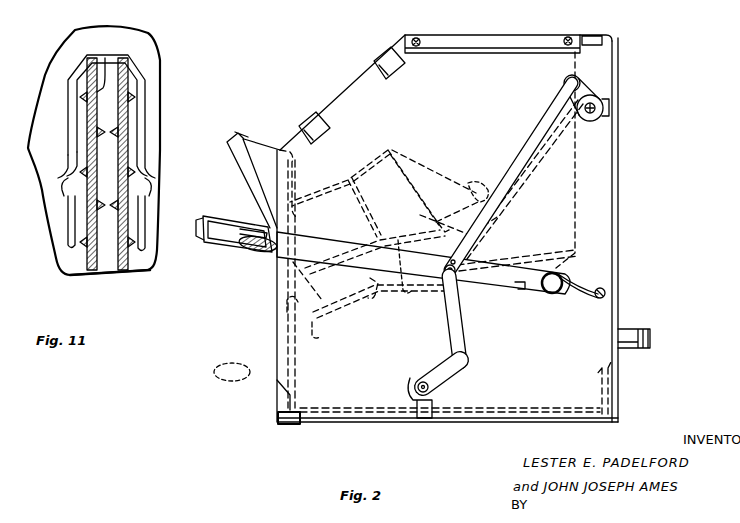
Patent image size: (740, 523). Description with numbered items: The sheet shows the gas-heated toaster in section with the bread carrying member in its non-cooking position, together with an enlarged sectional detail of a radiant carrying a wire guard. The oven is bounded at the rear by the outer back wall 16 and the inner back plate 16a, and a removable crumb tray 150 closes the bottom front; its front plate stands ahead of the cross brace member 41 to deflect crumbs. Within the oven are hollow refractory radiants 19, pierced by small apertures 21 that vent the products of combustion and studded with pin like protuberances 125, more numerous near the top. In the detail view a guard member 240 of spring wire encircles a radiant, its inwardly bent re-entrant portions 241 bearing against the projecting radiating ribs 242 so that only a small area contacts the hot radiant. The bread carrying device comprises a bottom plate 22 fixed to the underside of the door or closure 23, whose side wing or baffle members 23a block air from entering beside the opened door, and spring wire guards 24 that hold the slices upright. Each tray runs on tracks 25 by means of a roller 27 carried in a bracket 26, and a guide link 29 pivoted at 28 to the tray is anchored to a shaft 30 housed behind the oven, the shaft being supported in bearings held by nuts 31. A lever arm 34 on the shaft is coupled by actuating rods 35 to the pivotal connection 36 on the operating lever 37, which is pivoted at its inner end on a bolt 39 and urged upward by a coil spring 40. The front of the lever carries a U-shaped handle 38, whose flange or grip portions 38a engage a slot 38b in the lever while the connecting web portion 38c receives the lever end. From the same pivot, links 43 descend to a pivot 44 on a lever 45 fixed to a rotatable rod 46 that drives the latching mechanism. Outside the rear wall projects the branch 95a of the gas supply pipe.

In FIG. 2, the outer back wall 16 is at (620, 150).
In FIG. 2, the inner back plate 16a is at (577, 172).
In FIG. 11, the radiant 19 is at (105, 58).
In FIG. 11, the small apertures 21 is at (108, 272).
In FIG. 2, the bottom plate 22 is at (447, 214).
In FIG. 2, the door or closure 23 is at (238, 156).
In FIG. 2, the side wing or baffle members 23a is at (284, 132).
In FIG. 2, the spring wire guards 24 is at (392, 150).
In FIG. 2, the tracks or runways 25 is at (418, 290).
In FIG. 2, the bracket 26 is at (400, 262).
In FIG. 2, the roller 27 is at (384, 292).
In FIG. 2, the pivot 28 is at (470, 180).
In FIG. 2, the guide link 29 is at (510, 145).
In FIG. 2, the shaft 30 is at (600, 110).
In FIG. 2, the nuts 31 is at (604, 98).
In FIG. 2, the lever arm 34 is at (587, 91).
In FIG. 2, the actuating rods 35 is at (556, 110).
In FIG. 2, the pivotal connection 36 is at (457, 272).
In FIG. 2, the operating lever 37 is at (342, 246).
In FIG. 2, the handle 38 is at (215, 243).
In FIG. 2, the flange or grip portion 38a is at (250, 230).
In FIG. 2, the slot 38b is at (262, 252).
In FIG. 2, the connecting web portion 38c is at (196, 232).
In FIG. 2, the bolt 39 is at (550, 293).
In FIG. 2, the coil spring 40 is at (574, 284).
In FIG. 2, the cross brace member 41 is at (320, 337).
In FIG. 2, the links 43 is at (462, 317).
In FIG. 2, the pivot 44 is at (466, 358).
In FIG. 2, the lever 45 is at (452, 374).
In FIG. 2, the rod 46 is at (435, 398).
In FIG. 2, the branch of gas supply pipe 95a is at (628, 348).
In FIG. 11, the pin like protuberances 125 is at (130, 96).
In FIG. 2, the crumb tray 150 is at (277, 362).
In FIG. 11, the guard members 240 is at (148, 118).
In FIG. 11, the re-entrant portions 241 is at (151, 186).
In FIG. 11, the radiating ribs 242 is at (64, 188).